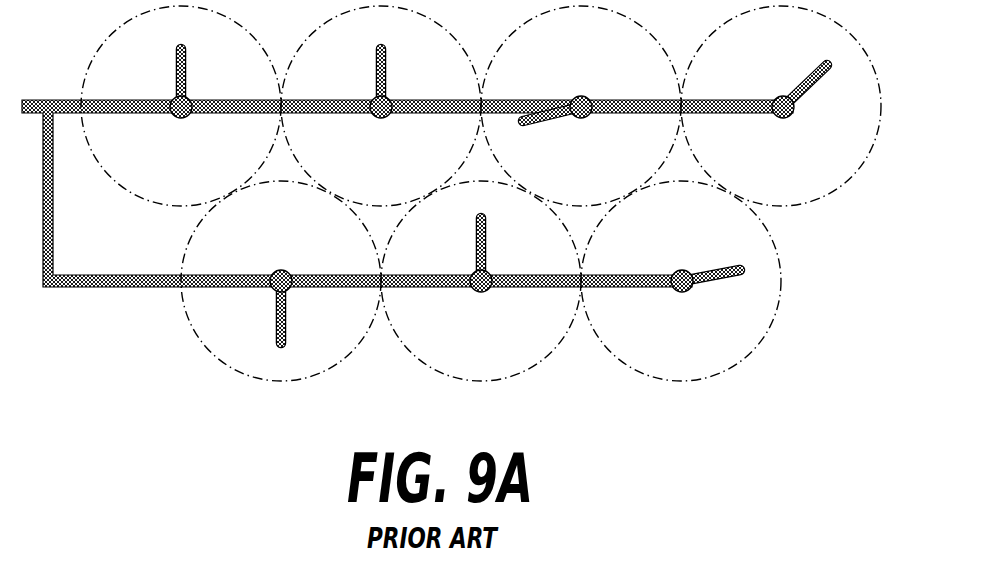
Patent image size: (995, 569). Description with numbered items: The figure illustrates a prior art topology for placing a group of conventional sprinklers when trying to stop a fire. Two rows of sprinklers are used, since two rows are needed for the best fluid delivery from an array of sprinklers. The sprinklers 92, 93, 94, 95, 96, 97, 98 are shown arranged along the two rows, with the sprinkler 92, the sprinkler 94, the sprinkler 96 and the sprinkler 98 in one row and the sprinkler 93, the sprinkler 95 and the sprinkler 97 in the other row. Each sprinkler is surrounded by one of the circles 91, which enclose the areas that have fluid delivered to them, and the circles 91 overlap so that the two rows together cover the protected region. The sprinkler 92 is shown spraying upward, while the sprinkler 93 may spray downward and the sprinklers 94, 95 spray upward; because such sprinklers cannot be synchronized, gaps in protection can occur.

The circles 91 is at (213, 352).
The sprinkler 92 is at (182, 118).
The sprinkler 93 is at (279, 269).
The sprinkler 94 is at (382, 118).
The sprinkler 95 is at (481, 292).
The sprinkler 96 is at (581, 96).
The sprinkler 97 is at (683, 292).
The sprinkler 98 is at (785, 118).